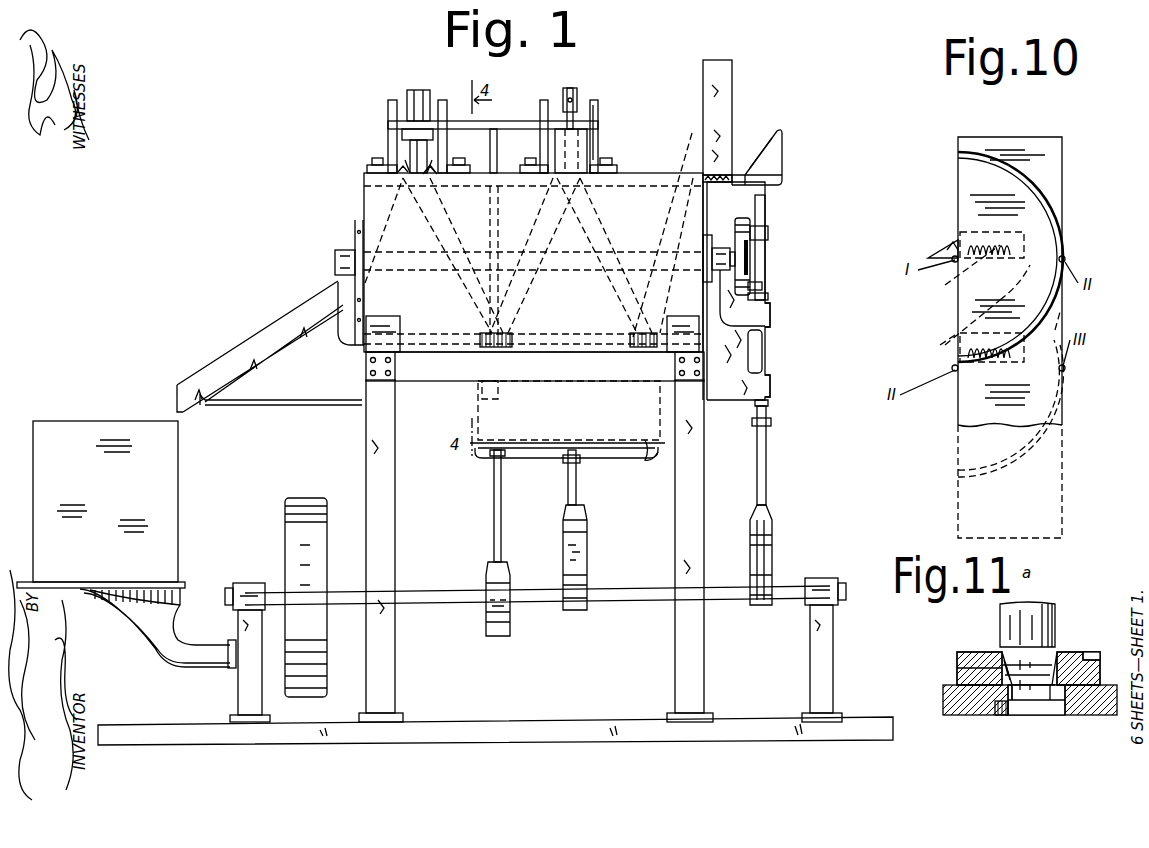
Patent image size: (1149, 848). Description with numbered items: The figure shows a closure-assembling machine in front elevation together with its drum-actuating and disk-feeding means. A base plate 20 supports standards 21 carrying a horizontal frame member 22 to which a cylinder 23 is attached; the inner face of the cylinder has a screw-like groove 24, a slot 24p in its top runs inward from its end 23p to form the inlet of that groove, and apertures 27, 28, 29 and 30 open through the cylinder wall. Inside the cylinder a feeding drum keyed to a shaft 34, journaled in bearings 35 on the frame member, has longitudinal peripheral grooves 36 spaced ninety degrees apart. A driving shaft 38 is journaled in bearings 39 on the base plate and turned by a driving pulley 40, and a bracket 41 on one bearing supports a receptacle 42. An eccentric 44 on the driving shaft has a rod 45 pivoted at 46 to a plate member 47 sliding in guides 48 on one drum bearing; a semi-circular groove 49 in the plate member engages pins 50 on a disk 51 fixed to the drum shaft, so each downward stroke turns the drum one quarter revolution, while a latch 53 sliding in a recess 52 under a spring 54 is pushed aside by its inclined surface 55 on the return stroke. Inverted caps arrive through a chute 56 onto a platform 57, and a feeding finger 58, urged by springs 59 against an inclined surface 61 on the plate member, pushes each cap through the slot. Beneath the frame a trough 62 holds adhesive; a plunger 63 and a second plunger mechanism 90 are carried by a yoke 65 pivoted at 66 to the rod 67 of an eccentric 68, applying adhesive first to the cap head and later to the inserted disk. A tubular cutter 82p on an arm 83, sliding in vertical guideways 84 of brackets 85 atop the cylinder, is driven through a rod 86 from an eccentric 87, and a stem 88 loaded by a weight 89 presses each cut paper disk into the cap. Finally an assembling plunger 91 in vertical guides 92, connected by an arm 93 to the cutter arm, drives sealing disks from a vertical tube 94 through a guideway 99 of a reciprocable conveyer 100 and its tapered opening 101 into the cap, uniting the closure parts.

In FIG. 1, the base plate 20 is at (868, 727).
In FIG. 1, the legs or standards 21 is at (372, 448).
In FIG. 1, the horizontal frame member 22 is at (448, 381).
In FIG. 1, the cylinder 23 is at (648, 196).
In FIG. 11a, the cylinder 23 is at (1105, 710).
In FIG. 1, the end of the cylinder 23p is at (709, 222).
In FIG. 1, the screw-like groove 24 is at (600, 295).
In FIG. 11a, the screw-like groove 24 is at (998, 715).
In FIG. 1, the slot 24p is at (665, 226).
In FIG. 1, the aperture 27 is at (632, 348).
In FIG. 1, the aperture 28 is at (545, 191).
In FIG. 1, the aperture 29 is at (514, 336).
In FIG. 1, the aperture 30 is at (364, 187).
In FIG. 11a, the aperture 30 is at (1030, 700).
In FIG. 1, the shaft 34 is at (752, 252).
In FIG. 1, the bearings 35 is at (345, 250).
In FIG. 1, the longitudinal peripheral grooves 36 is at (307, 346).
In FIG. 1, the driving shaft 38 is at (438, 591).
In FIG. 1, the bearings 39 is at (252, 584).
In FIG. 1, the driving pulley 40 is at (305, 500).
In FIG. 1, the bracket 41 is at (143, 637).
In FIG. 1, the receptacle 42 is at (178, 510).
In FIG. 1, the eccentric 44 is at (774, 540).
In FIG. 1, the rod 45 is at (766, 470).
In FIG. 1, the pivot 46 is at (772, 422).
In FIG. 1, the plate member 47 is at (762, 348).
In FIG. 10, the plate member 47 is at (970, 395).
In FIG. 1, the guides 48 is at (771, 315).
In FIG. 10, the semi-circular groove 49 is at (1050, 206).
In FIG. 1, the pins 50 is at (769, 232).
In FIG. 10, the pins 50 is at (1065, 258).
In FIG. 1, the disk 51 is at (756, 282).
In FIG. 10, the recess 52 is at (1024, 250).
In FIG. 10, the latch 53 is at (950, 248).
In FIG. 10, the spring 54 is at (940, 340).
In FIG. 10, the inclined surface 55 is at (930, 248).
In FIG. 1, the chute 56 is at (733, 105).
In FIG. 1, the platform 57 is at (700, 191).
In FIG. 1, the feeding finger 58 is at (753, 166).
In FIG. 1, the springs 59 is at (706, 184).
In FIG. 1, the inclined surface 61 is at (768, 165).
In FIG. 1, the trough 62 is at (608, 450).
In FIG. 1, the plunger 63 is at (645, 396).
In FIG. 1, the yoke 65 is at (643, 460).
In FIG. 1, the pivot 66 is at (563, 461).
In FIG. 1, the rod 67 is at (568, 491).
In FIG. 1, the eccentric 68 is at (564, 538).
In FIG. 1, the tubular cutter 82p is at (582, 147).
In FIG. 1, the arm 83 is at (567, 108).
In FIG. 1, the vertical guideways 84 is at (543, 120).
In FIG. 1, the brackets 85 is at (555, 150).
In FIG. 1, the rod 86 is at (494, 510).
In FIG. 1, the eccentric 87 is at (488, 632).
In FIG. 1, the stem 88 is at (578, 102).
In FIG. 1, the weight 89 is at (573, 90).
In FIG. 1, the plunger mechanism 90 is at (482, 390).
In FIG. 1, the assembling plunger 91 is at (410, 150).
In FIG. 11a, the assembling plunger 91 is at (1058, 612).
In FIG. 1, the vertical guides 92 is at (388, 125).
In FIG. 1, the arm 93 is at (445, 105).
In FIG. 1, the vertical tube 94 is at (419, 95).
In FIG. 1, the guideway 99 is at (368, 168).
In FIG. 11a, the guideway 99 is at (1092, 663).
In FIG. 1, the reciprocable conveyer 100 is at (462, 169).
In FIG. 11a, the reciprocable conveyer 100 is at (1088, 652).
In FIG. 1, the opening 101 is at (440, 183).
In FIG. 11a, the opening 101 is at (957, 670).